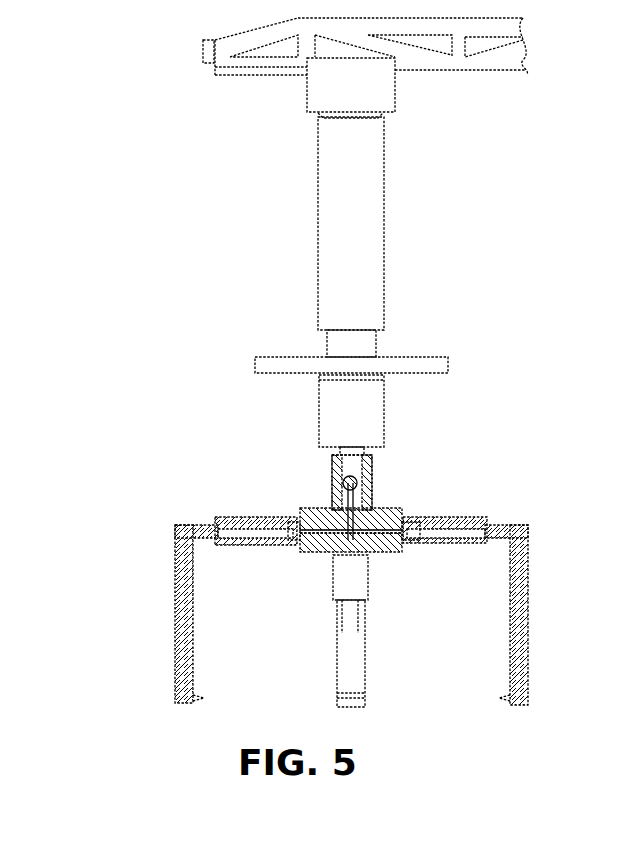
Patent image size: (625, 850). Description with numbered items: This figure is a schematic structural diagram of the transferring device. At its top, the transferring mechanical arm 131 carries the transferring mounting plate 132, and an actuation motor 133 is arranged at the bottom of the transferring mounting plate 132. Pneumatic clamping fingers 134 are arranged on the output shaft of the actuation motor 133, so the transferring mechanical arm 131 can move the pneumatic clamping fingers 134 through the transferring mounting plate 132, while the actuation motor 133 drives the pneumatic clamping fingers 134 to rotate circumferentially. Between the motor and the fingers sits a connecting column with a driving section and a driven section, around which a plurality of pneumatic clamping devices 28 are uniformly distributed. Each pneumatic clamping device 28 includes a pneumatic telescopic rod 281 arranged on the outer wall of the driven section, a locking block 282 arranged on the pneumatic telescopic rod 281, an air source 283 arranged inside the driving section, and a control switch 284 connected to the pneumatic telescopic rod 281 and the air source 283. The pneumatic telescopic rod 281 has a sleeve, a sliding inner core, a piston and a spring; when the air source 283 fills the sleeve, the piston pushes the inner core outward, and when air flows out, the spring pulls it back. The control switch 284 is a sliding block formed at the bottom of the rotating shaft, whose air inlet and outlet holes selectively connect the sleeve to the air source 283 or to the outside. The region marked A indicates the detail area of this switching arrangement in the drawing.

The transferring mechanical arm 131 is at (373, 238).
The transferring mounting plate 132 is at (372, 363).
The actuation motor 133 is at (373, 423).
The pneumatic clamping fingers 134 is at (355, 590).
The pneumatic clamping device 28 is at (93, 547).
The pneumatic telescopic rod 281 is at (237, 520).
The locking block 282 is at (176, 562).
The air source 283 is at (343, 460).
The control switch 284 is at (335, 483).
The detail region A is at (373, 482).